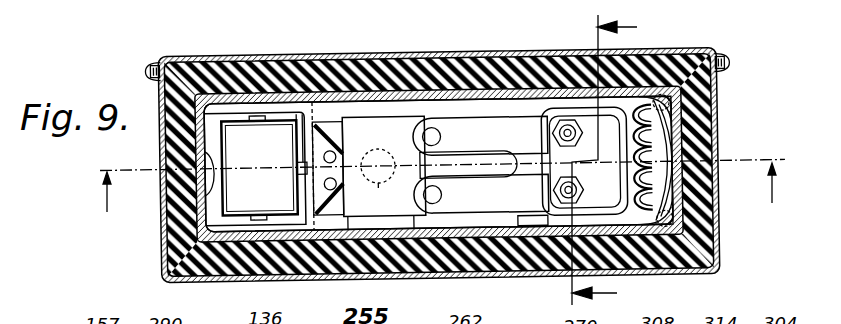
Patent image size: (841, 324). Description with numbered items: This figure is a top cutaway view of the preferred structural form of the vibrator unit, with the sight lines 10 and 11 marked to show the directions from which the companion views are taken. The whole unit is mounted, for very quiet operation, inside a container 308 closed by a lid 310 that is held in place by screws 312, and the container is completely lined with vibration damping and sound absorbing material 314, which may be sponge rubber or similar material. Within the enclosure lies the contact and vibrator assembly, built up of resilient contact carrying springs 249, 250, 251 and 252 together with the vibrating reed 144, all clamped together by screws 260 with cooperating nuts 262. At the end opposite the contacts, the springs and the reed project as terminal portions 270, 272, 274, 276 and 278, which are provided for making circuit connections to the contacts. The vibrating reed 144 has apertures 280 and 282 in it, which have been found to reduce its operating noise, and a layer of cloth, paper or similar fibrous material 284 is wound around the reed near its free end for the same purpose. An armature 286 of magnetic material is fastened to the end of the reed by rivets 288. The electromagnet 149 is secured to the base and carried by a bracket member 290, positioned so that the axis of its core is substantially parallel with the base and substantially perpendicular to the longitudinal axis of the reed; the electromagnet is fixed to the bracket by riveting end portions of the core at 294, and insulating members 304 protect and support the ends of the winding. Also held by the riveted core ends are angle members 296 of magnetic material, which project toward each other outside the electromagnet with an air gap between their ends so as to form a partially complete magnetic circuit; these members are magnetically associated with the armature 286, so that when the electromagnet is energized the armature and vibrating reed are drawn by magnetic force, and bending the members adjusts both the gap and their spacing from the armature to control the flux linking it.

The section line 10— 10 is at (439, 190).
The section line 11— 11 is at (642, 307).
The vibrating reed 144 is at (398, 263).
The electromagnet 149 is at (237, 154).
The contact carrying spring 249 is at (448, 130).
The contact carrying spring 250 is at (475, 201).
The contact carrying spring 251 is at (453, 85).
The contact carrying spring 252 is at (476, 253).
The screws 260 is at (556, 136).
The nuts 262 is at (589, 170).
The terminal portion 270 is at (645, 136).
The terminal portion 272 is at (665, 104).
The terminal portion 274 is at (650, 152).
The terminal portion 276 is at (650, 203).
The terminal portion 278 is at (650, 183).
The aperture 280 is at (468, 165).
The aperture 282 is at (381, 179).
The layer of fibrous material 284 is at (353, 117).
The armature 286 is at (316, 188).
The rivets 288 is at (340, 151).
The bracket member 290 is at (200, 231).
The riveted end portions of the core 294 is at (250, 95).
The angle members 296 is at (300, 119).
The insulating members 304 is at (211, 50).
The container 308 is at (716, 227).
The lid 310 is at (680, 48).
The screws 312 is at (150, 68).
The vibration damping and sound absorbing material 314 is at (288, 266).